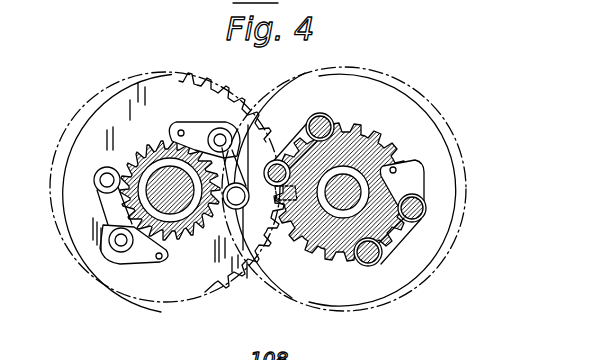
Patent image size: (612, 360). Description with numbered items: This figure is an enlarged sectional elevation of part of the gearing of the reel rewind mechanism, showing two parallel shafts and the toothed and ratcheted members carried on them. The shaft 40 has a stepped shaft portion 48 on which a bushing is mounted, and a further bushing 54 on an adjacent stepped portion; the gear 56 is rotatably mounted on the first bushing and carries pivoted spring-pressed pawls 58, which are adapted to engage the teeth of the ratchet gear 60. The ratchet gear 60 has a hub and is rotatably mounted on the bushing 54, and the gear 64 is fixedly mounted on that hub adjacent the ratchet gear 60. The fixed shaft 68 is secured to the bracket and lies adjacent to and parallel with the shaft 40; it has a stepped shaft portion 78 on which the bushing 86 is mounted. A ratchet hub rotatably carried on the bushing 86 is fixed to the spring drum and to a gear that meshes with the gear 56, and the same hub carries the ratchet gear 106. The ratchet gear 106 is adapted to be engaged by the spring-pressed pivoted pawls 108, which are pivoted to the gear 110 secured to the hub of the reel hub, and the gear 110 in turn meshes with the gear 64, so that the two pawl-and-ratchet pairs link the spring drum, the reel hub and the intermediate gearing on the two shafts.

The shaft 40 is at (345, 175).
The stepped shaft portion 48 is at (338, 172).
The bushing 54 is at (328, 134).
The gear 56 is at (452, 138).
The pivoted spring-pressed pawls 58 is at (408, 177).
The ratchet gear 60 is at (384, 177).
The gear 64 is at (331, 259).
The fixed shaft 68 is at (150, 181).
The stepped shaft portion 78 is at (181, 207).
The bushing 86 is at (150, 162).
The ratchet gear 106 is at (128, 164).
The spring-pressed pivoted pawls 108 is at (222, 127).
The gear 110 is at (95, 96).